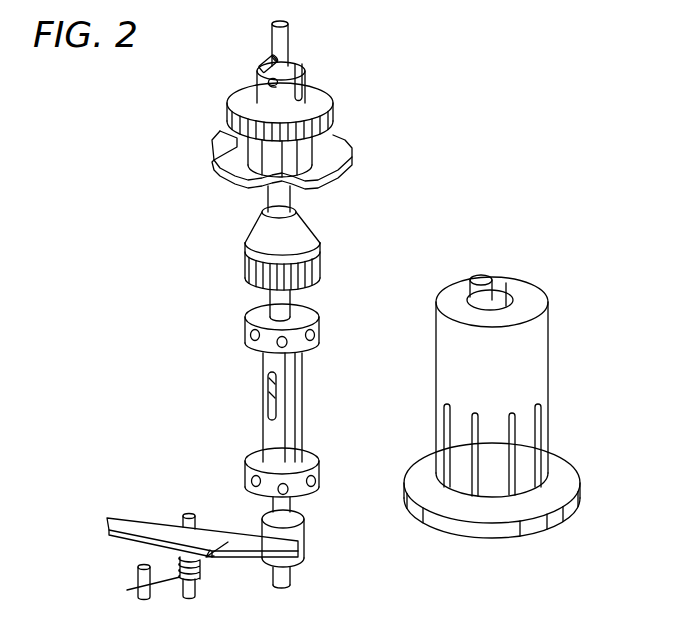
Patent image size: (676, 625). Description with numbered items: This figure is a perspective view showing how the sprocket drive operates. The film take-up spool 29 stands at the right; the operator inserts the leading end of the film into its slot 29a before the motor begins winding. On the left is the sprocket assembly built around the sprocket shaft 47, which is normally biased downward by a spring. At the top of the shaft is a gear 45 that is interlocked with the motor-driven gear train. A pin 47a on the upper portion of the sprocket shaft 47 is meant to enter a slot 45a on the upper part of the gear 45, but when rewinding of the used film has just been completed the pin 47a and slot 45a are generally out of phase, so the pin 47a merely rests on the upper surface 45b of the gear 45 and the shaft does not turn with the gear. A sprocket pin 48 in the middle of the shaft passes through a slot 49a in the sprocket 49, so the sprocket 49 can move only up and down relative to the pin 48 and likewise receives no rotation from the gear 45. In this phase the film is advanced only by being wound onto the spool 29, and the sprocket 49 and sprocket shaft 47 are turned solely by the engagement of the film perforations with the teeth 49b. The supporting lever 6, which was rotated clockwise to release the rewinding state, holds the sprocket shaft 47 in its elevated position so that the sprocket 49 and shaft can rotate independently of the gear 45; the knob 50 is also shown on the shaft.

The supporting lever 6 is at (244, 548).
The spool 29 is at (538, 356).
The slot 29a is at (512, 434).
The gear 45 is at (322, 100).
The slot 45a is at (302, 68).
The upper surface 45b is at (270, 82).
The sprocket shaft 47 is at (288, 506).
The pin 47a is at (262, 62).
The sprocket pin 48 is at (264, 394).
The sprocket 49 is at (289, 407).
The slot 49a is at (277, 410).
The teeth 49b is at (308, 336).
The knob 50 is at (318, 260).